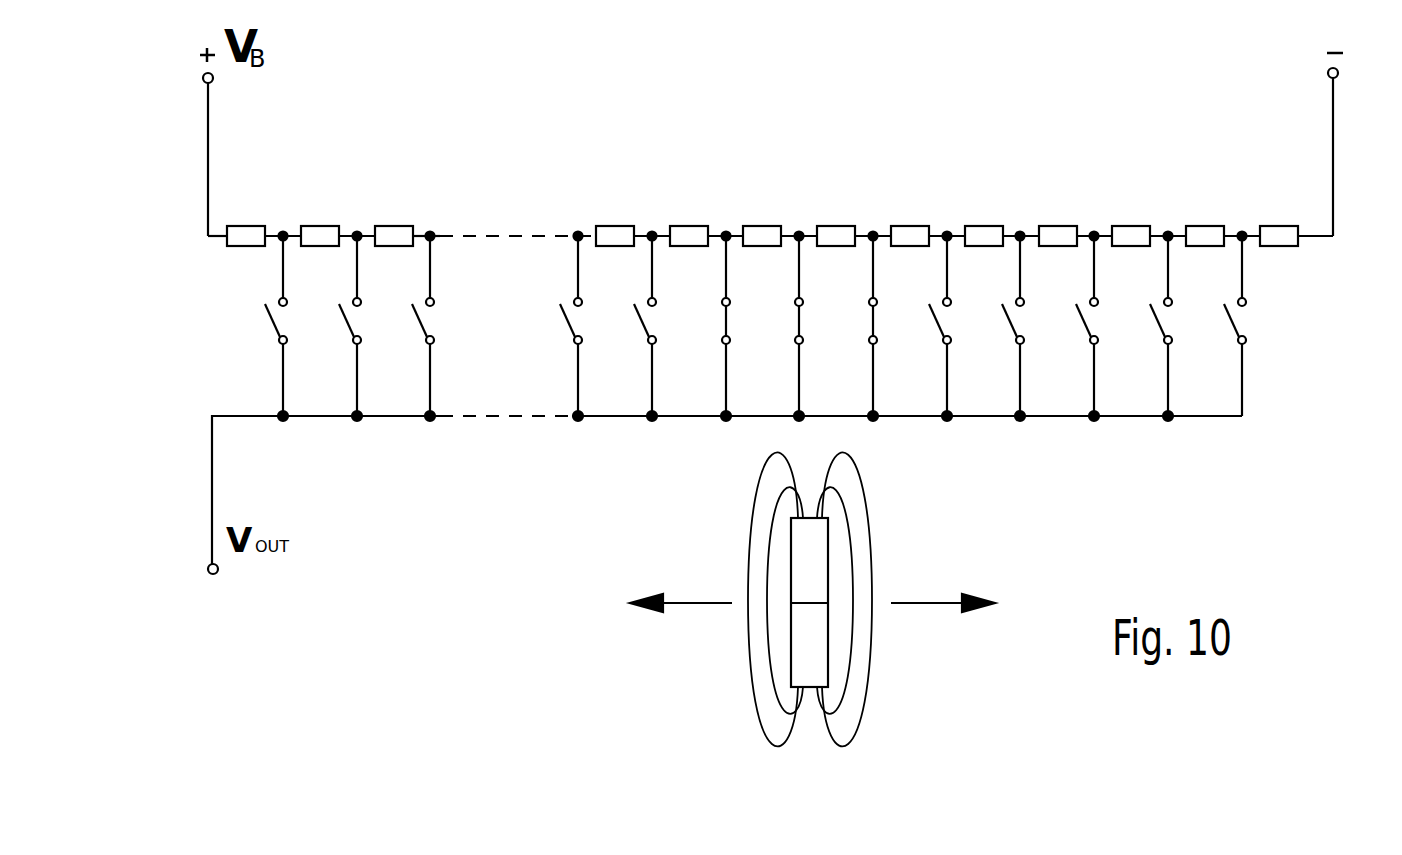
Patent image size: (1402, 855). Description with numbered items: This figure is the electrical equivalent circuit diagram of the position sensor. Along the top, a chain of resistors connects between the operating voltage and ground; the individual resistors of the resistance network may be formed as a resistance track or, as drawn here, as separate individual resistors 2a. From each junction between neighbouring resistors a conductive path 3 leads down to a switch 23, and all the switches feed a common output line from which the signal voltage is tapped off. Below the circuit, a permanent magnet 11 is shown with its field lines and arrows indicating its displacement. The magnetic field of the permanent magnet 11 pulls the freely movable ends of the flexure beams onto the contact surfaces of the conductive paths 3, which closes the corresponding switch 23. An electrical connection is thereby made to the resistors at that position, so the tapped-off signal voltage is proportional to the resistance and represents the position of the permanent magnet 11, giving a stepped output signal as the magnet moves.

The individual resistor 2a is at (833, 226).
The conductive path 3 is at (1243, 283).
The switch 23 is at (1237, 321).
The permanent magnet 11 is at (828, 665).